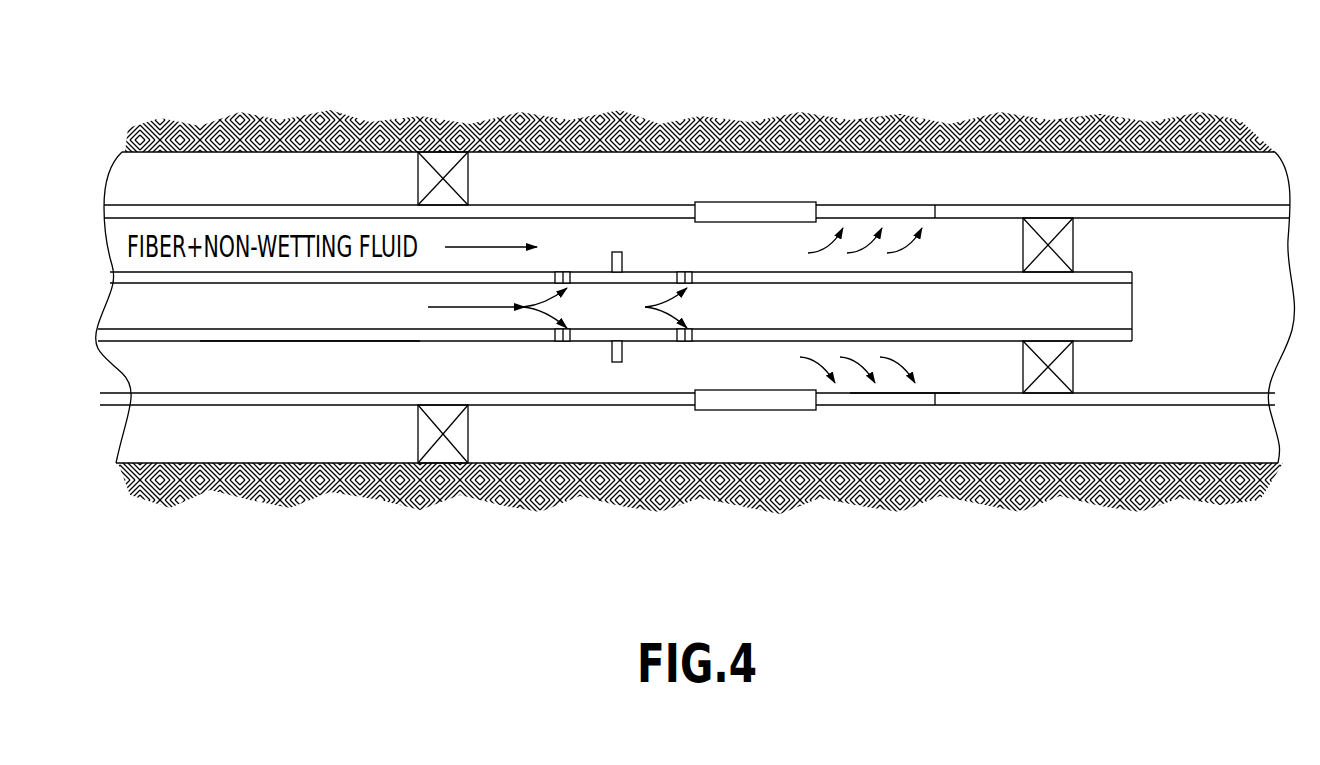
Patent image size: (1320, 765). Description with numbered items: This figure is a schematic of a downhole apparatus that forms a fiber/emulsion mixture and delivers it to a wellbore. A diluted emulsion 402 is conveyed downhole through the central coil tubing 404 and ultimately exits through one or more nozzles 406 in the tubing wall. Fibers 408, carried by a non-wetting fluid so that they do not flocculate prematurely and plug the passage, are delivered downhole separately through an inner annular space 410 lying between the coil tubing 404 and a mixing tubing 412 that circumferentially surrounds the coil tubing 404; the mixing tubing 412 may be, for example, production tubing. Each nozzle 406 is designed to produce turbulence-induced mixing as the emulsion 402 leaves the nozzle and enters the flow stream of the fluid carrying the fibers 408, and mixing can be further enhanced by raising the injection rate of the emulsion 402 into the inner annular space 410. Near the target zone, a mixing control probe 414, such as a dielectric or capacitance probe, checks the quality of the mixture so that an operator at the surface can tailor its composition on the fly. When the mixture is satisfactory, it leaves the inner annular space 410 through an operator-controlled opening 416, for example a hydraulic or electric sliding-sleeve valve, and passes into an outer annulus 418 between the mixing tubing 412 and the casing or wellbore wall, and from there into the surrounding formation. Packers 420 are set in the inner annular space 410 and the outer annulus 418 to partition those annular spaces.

The emulsion 402 is at (401, 314).
The coil tubing 404 is at (328, 333).
The nozzle 406 is at (565, 270).
The fibers 408 is at (768, 256).
The inner annular space 410 is at (967, 238).
The mixing tubing 412 is at (612, 398).
The mixing control probe 414 is at (617, 252).
The operator-controlled opening 416 is at (913, 398).
The outer annulus 418 is at (1183, 178).
The packers 420 is at (442, 453).